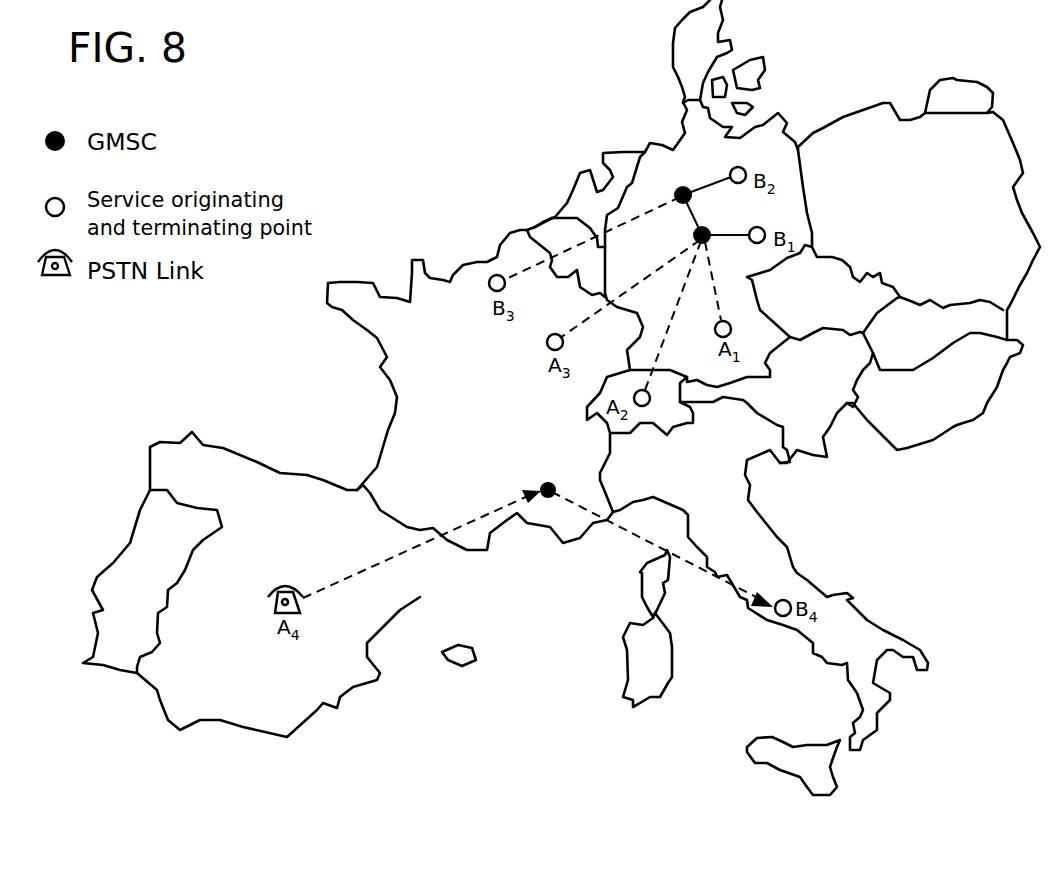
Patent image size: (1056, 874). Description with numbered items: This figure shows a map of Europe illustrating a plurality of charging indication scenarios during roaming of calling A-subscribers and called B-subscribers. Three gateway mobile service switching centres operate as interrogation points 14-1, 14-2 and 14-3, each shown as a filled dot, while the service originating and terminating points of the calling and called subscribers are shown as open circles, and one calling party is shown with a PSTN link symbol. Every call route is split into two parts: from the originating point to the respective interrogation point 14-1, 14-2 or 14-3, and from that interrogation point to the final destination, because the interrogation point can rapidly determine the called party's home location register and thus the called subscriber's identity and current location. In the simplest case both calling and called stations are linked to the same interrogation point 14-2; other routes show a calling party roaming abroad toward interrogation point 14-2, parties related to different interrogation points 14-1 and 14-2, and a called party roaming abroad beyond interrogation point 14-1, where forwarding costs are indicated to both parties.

The interrogation point 14-1 is at (681, 186).
The interrogation point 14-2 is at (694, 235).
The interrogation point 14-3 is at (547, 483).